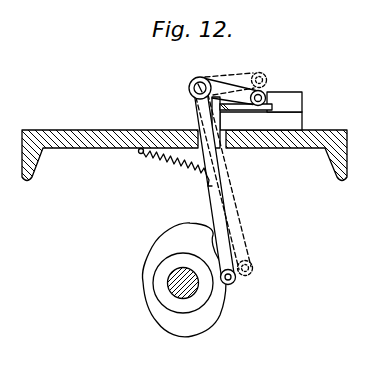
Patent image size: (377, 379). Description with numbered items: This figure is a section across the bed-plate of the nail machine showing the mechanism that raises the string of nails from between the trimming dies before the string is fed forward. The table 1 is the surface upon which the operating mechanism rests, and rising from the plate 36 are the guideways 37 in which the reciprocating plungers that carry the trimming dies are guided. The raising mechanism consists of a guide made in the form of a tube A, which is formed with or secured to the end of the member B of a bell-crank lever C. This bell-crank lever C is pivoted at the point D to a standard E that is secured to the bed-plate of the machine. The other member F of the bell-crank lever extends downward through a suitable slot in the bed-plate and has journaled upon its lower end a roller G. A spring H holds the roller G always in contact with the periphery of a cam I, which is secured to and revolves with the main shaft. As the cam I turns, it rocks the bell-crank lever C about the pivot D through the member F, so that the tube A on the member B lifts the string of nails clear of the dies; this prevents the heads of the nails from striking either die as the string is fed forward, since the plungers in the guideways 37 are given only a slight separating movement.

The table 1 is at (317, 149).
The plate 36 is at (290, 122).
The guideways 37 is at (293, 100).
The tube A is at (266, 91).
The member of bell-crank lever B is at (227, 90).
The bell-crank lever C is at (195, 119).
The pivot point D is at (196, 79).
The standard E is at (225, 110).
The member of bell-crank lever F is at (223, 222).
The roller G is at (236, 280).
The spring H is at (170, 175).
The cam I is at (148, 260).